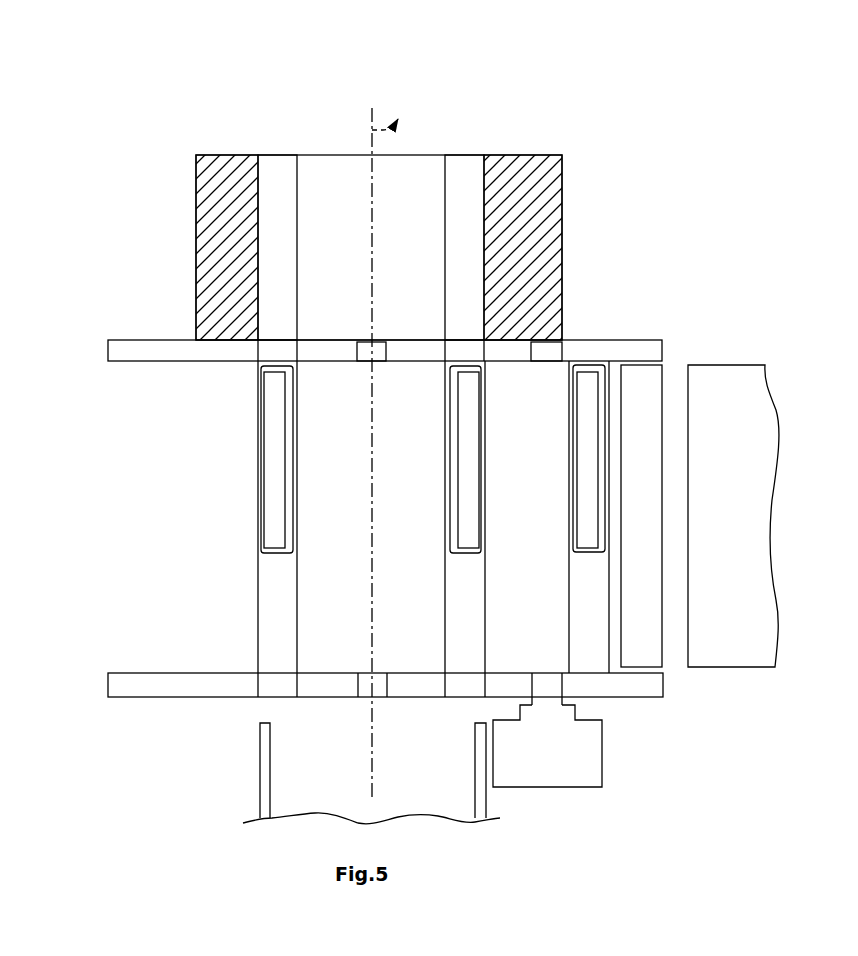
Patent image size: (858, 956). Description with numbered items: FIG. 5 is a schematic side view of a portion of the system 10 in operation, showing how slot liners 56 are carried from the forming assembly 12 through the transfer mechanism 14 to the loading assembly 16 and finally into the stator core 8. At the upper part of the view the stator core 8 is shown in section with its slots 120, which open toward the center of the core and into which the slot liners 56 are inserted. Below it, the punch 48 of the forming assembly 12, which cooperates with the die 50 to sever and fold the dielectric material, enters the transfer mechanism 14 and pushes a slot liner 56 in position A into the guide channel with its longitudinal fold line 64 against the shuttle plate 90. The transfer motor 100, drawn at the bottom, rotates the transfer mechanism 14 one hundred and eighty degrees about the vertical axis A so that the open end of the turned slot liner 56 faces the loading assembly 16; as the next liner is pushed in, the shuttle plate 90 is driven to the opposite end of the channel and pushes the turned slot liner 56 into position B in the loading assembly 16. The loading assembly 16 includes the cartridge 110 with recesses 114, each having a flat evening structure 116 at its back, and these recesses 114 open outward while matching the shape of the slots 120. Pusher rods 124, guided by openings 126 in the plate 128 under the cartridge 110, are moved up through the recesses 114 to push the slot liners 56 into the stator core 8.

The stator core 8 is at (566, 226).
The system 10 is at (675, 204).
The forming assembly 12 is at (682, 294).
The transfer mechanism 14 is at (509, 514).
The loading assembly 16 is at (326, 509).
The punch 48 is at (728, 418).
The die 50 is at (644, 391).
The slot liner 56 is at (478, 523).
The longitudinal fold line 64 is at (570, 392).
The shuttle plate 90 is at (498, 378).
The transfer motor 100 is at (552, 760).
The cartridge 110 is at (315, 597).
The recesses 114 is at (280, 623).
The evening structure 116 is at (297, 580).
The slots 120 is at (276, 165).
The pusher rods 124 is at (262, 783).
The openings 126 is at (275, 683).
The plate 128 is at (165, 683).